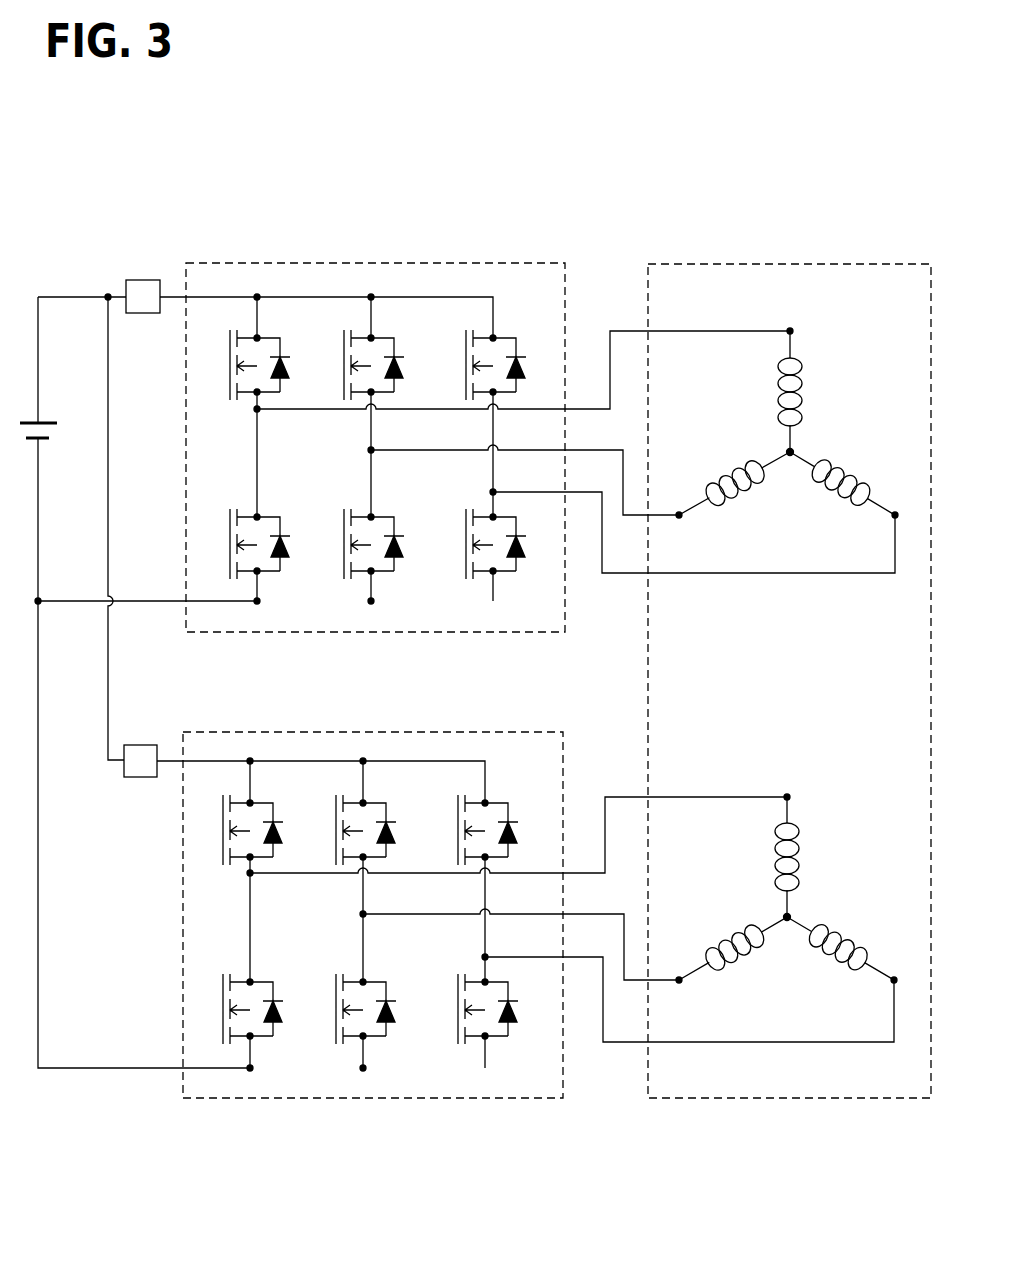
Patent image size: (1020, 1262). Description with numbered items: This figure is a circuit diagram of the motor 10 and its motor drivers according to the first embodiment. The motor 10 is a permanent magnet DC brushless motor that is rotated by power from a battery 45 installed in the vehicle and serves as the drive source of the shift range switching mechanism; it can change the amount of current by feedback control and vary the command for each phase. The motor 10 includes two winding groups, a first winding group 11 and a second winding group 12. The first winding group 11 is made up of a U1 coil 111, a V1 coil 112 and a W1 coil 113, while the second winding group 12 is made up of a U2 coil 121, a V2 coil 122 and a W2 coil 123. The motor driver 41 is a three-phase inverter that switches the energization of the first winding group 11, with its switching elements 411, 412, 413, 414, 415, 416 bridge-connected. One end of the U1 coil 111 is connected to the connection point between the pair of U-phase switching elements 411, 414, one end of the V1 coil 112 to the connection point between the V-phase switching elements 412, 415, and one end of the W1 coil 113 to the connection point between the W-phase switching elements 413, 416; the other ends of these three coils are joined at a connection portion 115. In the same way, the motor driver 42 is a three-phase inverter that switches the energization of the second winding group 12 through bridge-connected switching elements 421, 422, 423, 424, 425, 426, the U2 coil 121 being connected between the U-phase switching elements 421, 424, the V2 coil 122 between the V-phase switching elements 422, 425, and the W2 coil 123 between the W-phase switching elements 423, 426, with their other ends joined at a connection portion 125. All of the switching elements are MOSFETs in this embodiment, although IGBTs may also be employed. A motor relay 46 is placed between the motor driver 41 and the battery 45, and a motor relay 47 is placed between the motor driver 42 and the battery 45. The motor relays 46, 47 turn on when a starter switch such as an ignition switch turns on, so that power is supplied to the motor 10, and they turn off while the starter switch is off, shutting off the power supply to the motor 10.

The motor 10 is at (692, 263).
The first winding group 11 is at (810, 353).
The second winding group 12 is at (805, 821).
The U1 coil 111 is at (804, 386).
The V1 coil 112 is at (737, 470).
The W1 coil 113 is at (838, 468).
The connection portion 115 is at (787, 468).
The U2 coil 121 is at (801, 852).
The V2 coil 122 is at (736, 935).
The W2 coil 123 is at (838, 933).
The connection portion 125 is at (786, 934).
The motor driver 41 is at (218, 263).
The motor driver 42 is at (213, 732).
The switching element 411 is at (264, 337).
The switching element 412 is at (378, 337).
The switching element 413 is at (503, 337).
The switching element 414 is at (265, 516).
The switching element 415 is at (378, 516).
The switching element 416 is at (518, 563).
The switching element 421 is at (257, 802).
The switching element 422 is at (369, 802).
The switching element 423 is at (497, 802).
The switching element 424 is at (258, 981).
The switching element 425 is at (369, 981).
The switching element 426 is at (510, 1030).
The battery 45 is at (50, 422).
The motor relay 46 is at (134, 280).
The motor relay 47 is at (135, 745).